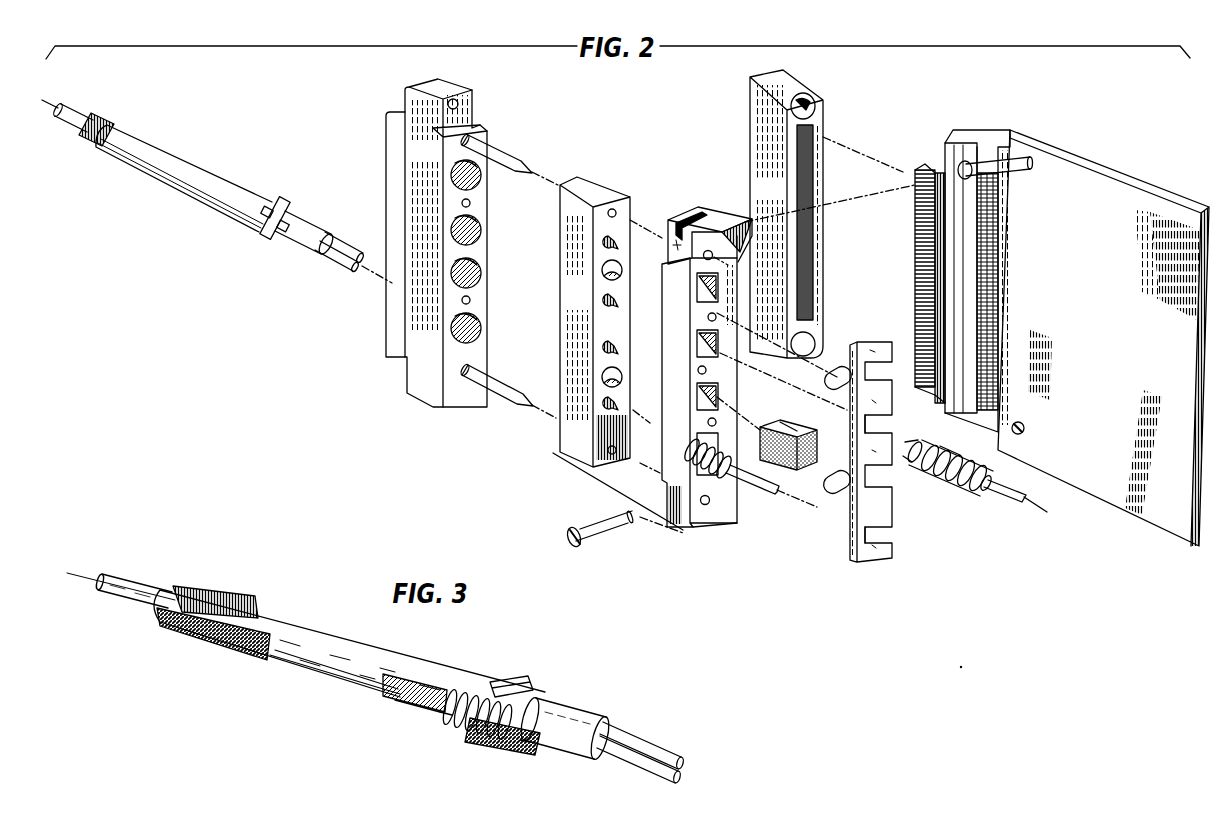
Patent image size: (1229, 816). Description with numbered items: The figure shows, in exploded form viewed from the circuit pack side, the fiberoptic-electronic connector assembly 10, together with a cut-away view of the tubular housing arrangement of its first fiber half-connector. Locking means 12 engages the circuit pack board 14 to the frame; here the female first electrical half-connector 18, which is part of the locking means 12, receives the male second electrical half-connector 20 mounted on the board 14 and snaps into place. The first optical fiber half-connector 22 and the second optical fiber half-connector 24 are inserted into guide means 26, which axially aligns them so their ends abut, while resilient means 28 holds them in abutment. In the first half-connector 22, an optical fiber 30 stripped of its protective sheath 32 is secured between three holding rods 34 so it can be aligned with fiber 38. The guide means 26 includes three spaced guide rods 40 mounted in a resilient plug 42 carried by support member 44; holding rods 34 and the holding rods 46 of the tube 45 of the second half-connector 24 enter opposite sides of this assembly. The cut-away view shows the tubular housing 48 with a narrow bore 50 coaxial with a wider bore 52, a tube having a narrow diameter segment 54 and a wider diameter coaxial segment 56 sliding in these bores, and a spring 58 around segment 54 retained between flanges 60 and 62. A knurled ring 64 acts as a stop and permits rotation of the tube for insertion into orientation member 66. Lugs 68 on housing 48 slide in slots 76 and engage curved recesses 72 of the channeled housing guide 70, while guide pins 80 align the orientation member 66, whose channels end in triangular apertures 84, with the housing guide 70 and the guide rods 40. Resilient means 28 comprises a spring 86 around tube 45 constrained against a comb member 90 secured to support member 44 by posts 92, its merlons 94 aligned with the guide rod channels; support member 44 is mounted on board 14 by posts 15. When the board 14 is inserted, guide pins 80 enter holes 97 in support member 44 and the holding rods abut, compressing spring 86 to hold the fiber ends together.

In FIG. 2, the fiberoptic-electronic connector assembly 10 is at (476, 480).
In FIG. 2, the locking means 12 is at (757, 165).
In FIG. 2, the board 14 is at (1103, 185).
In FIG. 2, the posts 15 is at (1005, 178).
In FIG. 2, the first electrical half-connector 18 is at (815, 166).
In FIG. 2, the second electrical half-connector 20 is at (915, 262).
In FIG. 2, the first optical fiber half-connector 22 is at (200, 183).
In FIG. 3, the first optical fiber half-connector 22 is at (376, 631).
In FIG. 2, the second optical fiber half-connector 24 is at (737, 452).
In FIG. 2, the guide means 26 is at (586, 505).
In FIG. 2, the resilient means 28 is at (850, 522).
In FIG. 2, the optical fiber 30 is at (66, 99).
In FIG. 3, the optical fiber 30 is at (67, 573).
In FIG. 3, the protective sheath 32 is at (127, 582).
In FIG. 2, the holding rods 34 is at (326, 268).
In FIG. 3, the holding rods 34 is at (636, 744).
In FIG. 2, the fiber 38 is at (1033, 506).
In FIG. 2, the guide rods 40 is at (797, 470).
In FIG. 2, the resilient plug 42 is at (720, 352).
In FIG. 2, the support member 44 is at (740, 512).
In FIG. 2, the tube 45 is at (986, 490).
In FIG. 2, the holding rods 46 is at (922, 458).
In FIG. 3, the tubular housing 48 is at (312, 635).
In FIG. 3, the narrow bore 50 is at (430, 722).
In FIG. 3, the wider bore 52 is at (510, 745).
In FIG. 3, the narrow diameter segment 54 is at (168, 595).
In FIG. 2, the wider diameter coaxial segment 56 is at (308, 230).
In FIG. 3, the wider diameter coaxial segment 56 is at (580, 716).
In FIG. 3, the spring 58 is at (475, 735).
In FIG. 3, the flange 60 is at (452, 730).
In FIG. 3, the flange 62 is at (525, 748).
In FIG. 3, the knurled ring 64 is at (208, 590).
In FIG. 2, the orientation member 66 is at (563, 330).
In FIG. 2, the lugs 68 is at (273, 205).
In FIG. 3, the lugs 68 is at (515, 680).
In FIG. 2, the channeled housing guide 70 is at (398, 148).
In FIG. 2, the curved recesses 72 is at (481, 217).
In FIG. 2, the slots 76 is at (479, 270).
In FIG. 2, the guide pins 80 is at (507, 158).
In FIG. 2, the triangular apertures 84 is at (625, 290).
In FIG. 2, the spring 86 is at (955, 490).
In FIG. 2, the comb member 90 is at (850, 548).
In FIG. 2, the posts 92 is at (838, 365).
In FIG. 2, the merlons 94 is at (886, 417).
In FIG. 2, the holes 97 is at (705, 505).